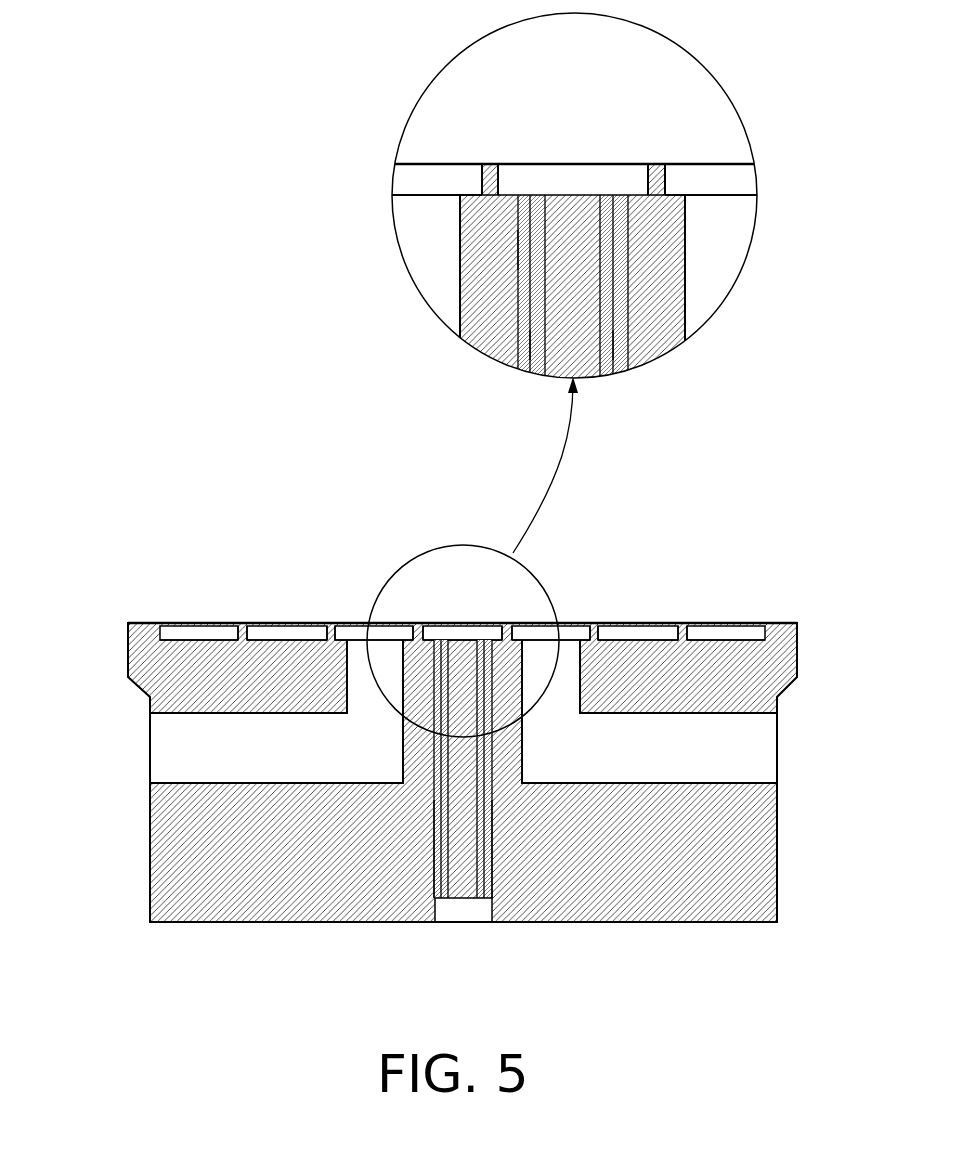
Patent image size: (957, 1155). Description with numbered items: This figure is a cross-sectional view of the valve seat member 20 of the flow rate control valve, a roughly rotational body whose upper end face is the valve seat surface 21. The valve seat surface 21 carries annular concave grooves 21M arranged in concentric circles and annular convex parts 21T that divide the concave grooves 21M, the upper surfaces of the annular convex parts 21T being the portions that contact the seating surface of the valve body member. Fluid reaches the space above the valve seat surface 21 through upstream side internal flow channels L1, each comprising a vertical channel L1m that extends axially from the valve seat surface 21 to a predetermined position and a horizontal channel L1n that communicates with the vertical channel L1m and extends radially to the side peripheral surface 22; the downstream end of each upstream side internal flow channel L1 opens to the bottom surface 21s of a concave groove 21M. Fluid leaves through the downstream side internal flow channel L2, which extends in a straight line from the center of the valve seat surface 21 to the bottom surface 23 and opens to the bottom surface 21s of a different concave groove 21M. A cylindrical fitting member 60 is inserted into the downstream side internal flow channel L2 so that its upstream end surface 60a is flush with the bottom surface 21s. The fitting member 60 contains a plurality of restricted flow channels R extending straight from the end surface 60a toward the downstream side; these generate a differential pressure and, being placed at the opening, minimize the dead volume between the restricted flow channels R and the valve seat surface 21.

The valve seat member 20 is at (778, 524).
The valve seat surface 21 is at (330, 623).
The annular convex part 21T is at (233, 628).
The annular concave groove 21M is at (193, 633).
The bottom surface of concave groove 21s is at (480, 183).
The side peripheral surface 22 is at (150, 852).
The bottom surface 23 is at (622, 924).
The fitting member 60 is at (470, 640).
The end surface of fitting member 60a is at (563, 194).
The upstream side internal flow channel L1 is at (45, 702).
The vertical channel L1m is at (367, 675).
The horizontal channel L1n is at (255, 731).
The downstream side internal flow channel L2 is at (464, 907).
The restricted flow channel R is at (428, 898).